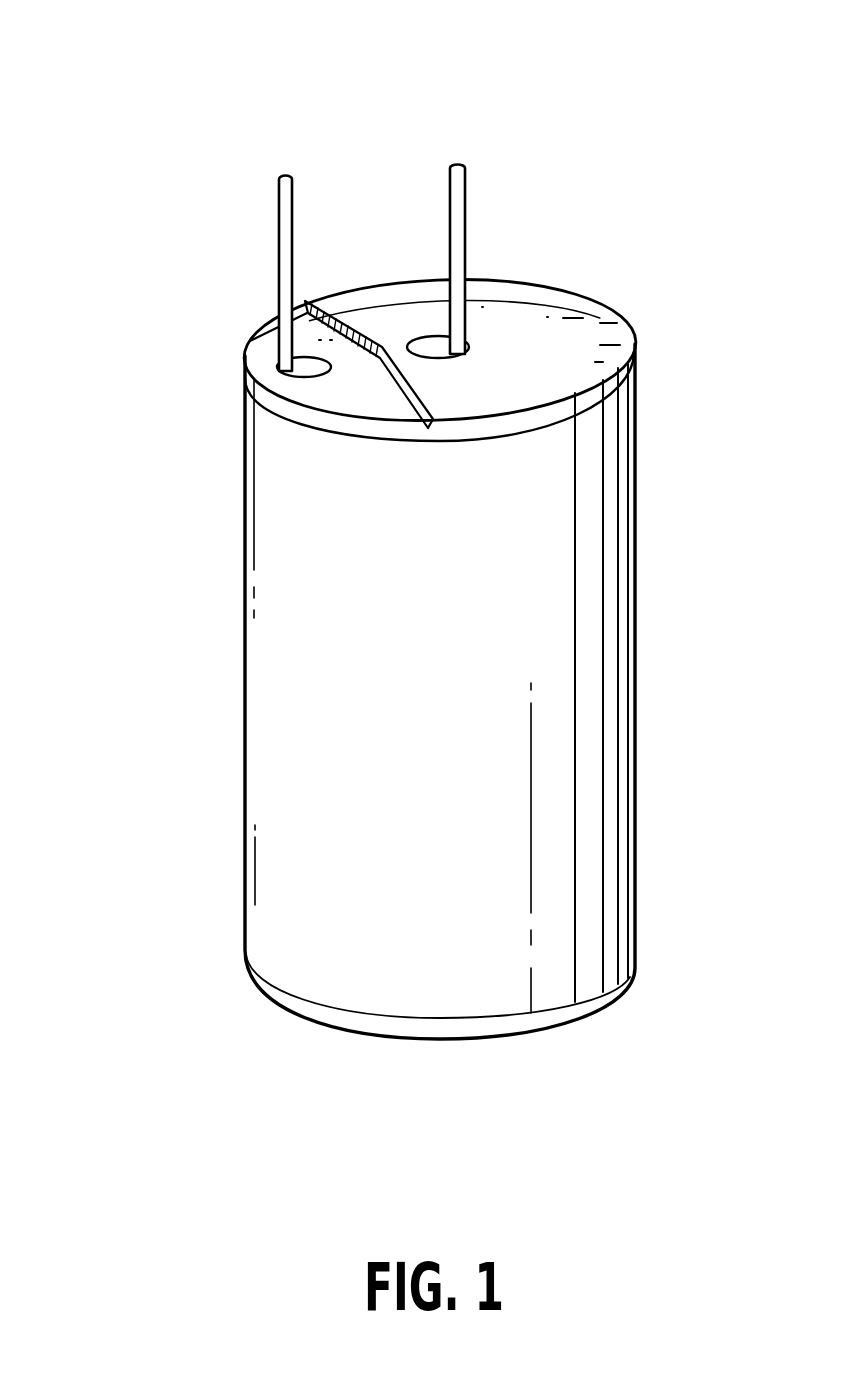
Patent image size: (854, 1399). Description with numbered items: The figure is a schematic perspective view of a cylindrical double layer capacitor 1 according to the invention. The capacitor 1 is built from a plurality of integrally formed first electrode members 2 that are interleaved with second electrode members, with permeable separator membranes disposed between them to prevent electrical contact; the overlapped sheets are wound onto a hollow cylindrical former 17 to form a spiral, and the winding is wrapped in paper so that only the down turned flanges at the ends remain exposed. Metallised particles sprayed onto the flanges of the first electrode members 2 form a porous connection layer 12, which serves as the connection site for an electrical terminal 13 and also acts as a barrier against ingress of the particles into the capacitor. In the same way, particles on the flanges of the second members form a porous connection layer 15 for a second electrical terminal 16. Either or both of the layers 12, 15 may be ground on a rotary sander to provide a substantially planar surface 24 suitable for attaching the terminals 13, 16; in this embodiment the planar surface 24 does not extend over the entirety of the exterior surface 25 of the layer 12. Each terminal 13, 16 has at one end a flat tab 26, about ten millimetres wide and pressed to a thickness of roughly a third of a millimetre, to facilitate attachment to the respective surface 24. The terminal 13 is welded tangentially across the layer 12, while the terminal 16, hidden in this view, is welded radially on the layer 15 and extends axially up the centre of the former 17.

The cylindrical double layer capacitor 1 is at (424, 588).
The first electrode members 2 is at (428, 108).
The porous connection layer 12 is at (505, 321).
The electrical terminal 13 is at (283, 233).
The porous connection layer 15 is at (614, 978).
The electrical terminal 16 is at (461, 217).
The hollow cylindrical former 17 is at (428, 348).
The substantially planar surface 24 is at (258, 352).
The exterior surface 25 is at (590, 339).
The flat tab 26 is at (310, 368).